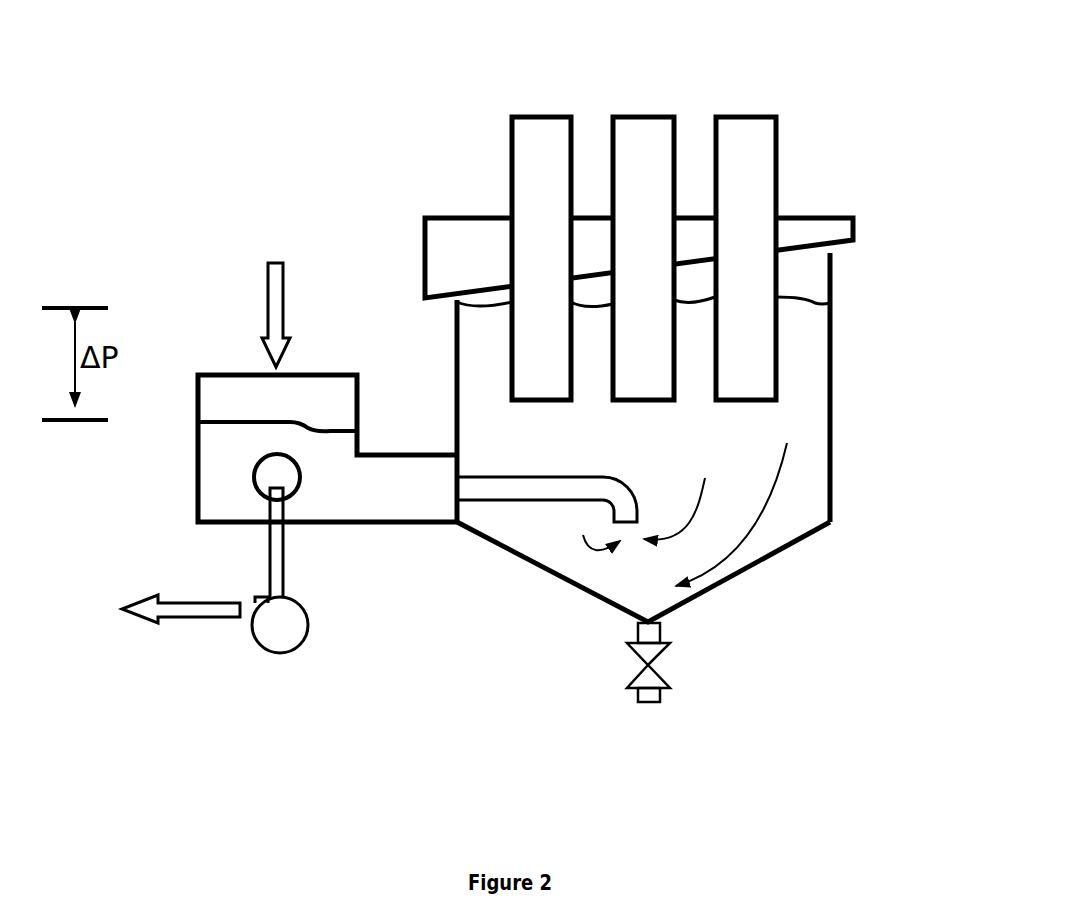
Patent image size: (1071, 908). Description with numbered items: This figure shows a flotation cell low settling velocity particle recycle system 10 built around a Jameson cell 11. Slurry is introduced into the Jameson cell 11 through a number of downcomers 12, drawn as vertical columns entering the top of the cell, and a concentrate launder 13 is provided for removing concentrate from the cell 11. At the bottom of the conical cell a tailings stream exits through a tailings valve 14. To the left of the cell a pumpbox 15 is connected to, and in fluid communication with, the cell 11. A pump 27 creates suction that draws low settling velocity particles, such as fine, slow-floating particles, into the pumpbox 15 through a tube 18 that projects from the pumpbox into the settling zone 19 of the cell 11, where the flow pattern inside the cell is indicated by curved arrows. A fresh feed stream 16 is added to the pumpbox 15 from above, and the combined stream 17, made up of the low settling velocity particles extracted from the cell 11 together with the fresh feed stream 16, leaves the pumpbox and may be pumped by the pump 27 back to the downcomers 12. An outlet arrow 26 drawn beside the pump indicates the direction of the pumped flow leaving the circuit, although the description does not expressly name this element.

The low settling velocity particle recycle system 10 is at (826, 188).
The Jameson cell 11 is at (802, 430).
The downcomers 12 is at (738, 105).
The concentrate launder 13 is at (427, 203).
The tailings valve 14 is at (667, 670).
The pumpbox 15 is at (233, 398).
The fresh feed stream 16 is at (262, 283).
The combined stream 17 is at (252, 554).
The tube 18 is at (500, 507).
The settling zone 19 is at (737, 501).
The outlet flow 26 is at (151, 611).
The pump 27 is at (316, 633).